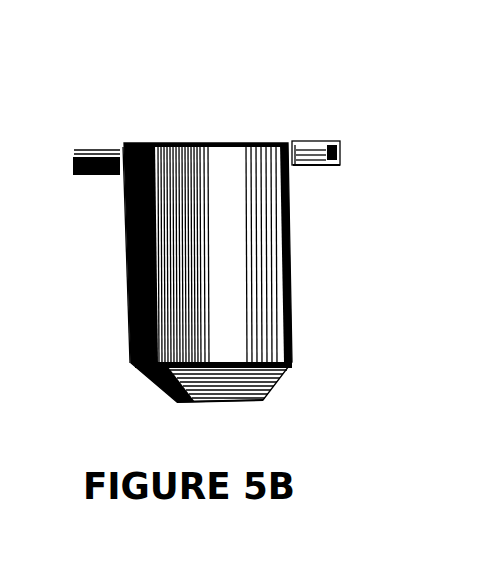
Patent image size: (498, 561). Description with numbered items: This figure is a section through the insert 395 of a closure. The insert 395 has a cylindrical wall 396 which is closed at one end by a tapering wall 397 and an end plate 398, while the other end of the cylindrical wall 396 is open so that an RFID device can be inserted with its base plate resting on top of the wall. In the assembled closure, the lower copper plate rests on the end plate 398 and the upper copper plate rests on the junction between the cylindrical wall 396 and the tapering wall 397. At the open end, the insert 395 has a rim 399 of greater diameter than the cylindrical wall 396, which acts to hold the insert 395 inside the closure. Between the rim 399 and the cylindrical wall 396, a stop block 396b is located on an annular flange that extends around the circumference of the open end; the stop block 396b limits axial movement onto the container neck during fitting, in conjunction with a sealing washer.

The insert 395 is at (167, 234).
The cylindrical wall 396 is at (76, 255).
The stop block 396b is at (325, 190).
The tapering wall 397 is at (158, 384).
The end plate 398 is at (242, 422).
The rim 399 is at (331, 109).